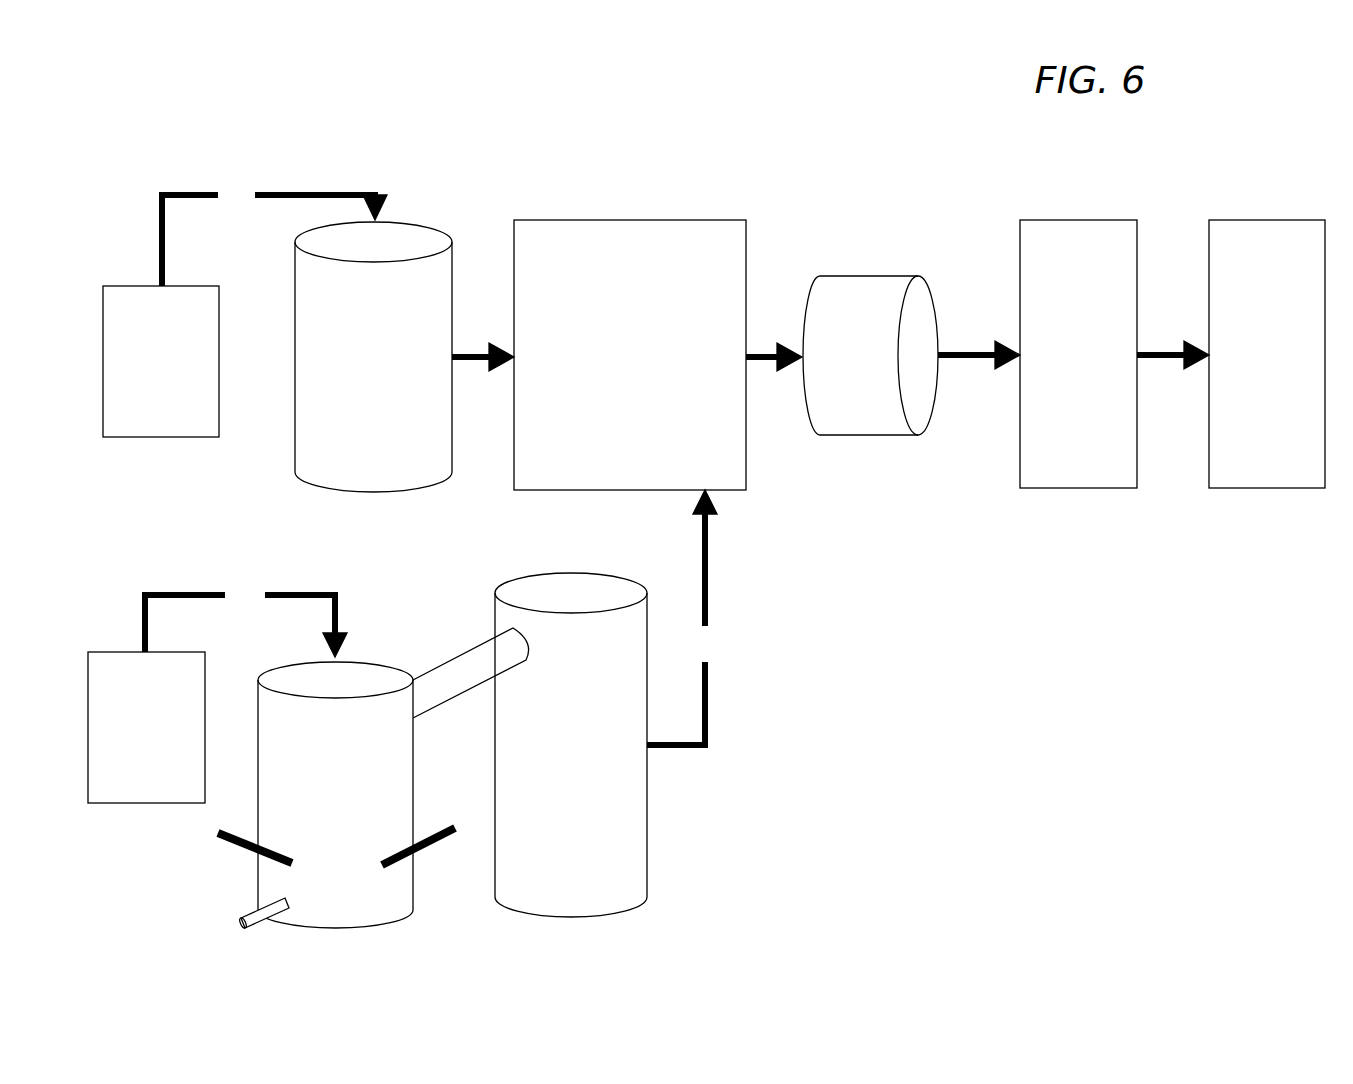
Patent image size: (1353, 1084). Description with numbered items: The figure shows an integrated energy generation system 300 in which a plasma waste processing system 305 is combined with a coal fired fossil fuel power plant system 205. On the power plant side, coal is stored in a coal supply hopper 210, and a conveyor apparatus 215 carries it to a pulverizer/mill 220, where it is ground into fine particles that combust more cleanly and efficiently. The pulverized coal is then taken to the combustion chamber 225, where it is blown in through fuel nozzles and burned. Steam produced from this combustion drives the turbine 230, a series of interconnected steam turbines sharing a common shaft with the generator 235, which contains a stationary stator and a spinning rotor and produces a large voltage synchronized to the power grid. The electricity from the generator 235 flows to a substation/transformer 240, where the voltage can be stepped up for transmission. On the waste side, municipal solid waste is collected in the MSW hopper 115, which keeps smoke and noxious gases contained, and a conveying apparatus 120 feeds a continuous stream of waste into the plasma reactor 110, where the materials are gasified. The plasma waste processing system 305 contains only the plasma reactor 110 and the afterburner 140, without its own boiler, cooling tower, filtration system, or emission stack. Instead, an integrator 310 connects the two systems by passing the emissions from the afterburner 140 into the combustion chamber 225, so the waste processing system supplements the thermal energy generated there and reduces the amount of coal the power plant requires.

The integrated energy generation system 300 is at (762, 96).
The fossil fuel power plant system 205 is at (577, 160).
The plasma waste processing system 305 is at (465, 553).
The coal supply hopper 210 is at (161, 361).
The conveyor apparatus 215 is at (274, 234).
The pulverizer/mill 220 is at (373, 357).
The combustion chamber 225 is at (630, 355).
The turbine 230 is at (870, 355).
The generator 235 is at (1078, 354).
The substation/transformer 240 is at (1267, 354).
The MSW hopper 115 is at (146, 727).
The conveying apparatus 120 is at (246, 620).
The plasma reactor 110 is at (336, 795).
The afterburner 140 is at (571, 745).
The integrator 310 is at (686, 617).